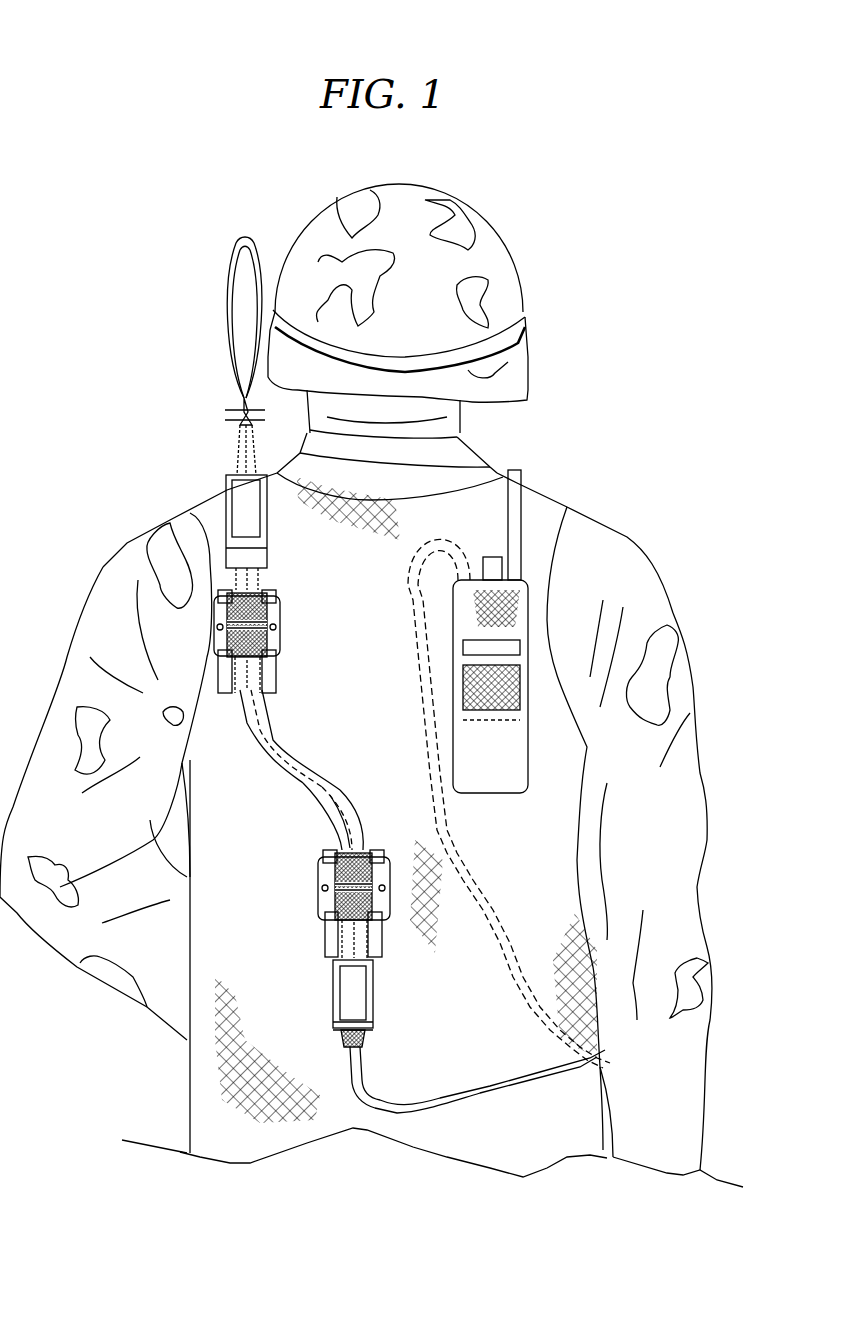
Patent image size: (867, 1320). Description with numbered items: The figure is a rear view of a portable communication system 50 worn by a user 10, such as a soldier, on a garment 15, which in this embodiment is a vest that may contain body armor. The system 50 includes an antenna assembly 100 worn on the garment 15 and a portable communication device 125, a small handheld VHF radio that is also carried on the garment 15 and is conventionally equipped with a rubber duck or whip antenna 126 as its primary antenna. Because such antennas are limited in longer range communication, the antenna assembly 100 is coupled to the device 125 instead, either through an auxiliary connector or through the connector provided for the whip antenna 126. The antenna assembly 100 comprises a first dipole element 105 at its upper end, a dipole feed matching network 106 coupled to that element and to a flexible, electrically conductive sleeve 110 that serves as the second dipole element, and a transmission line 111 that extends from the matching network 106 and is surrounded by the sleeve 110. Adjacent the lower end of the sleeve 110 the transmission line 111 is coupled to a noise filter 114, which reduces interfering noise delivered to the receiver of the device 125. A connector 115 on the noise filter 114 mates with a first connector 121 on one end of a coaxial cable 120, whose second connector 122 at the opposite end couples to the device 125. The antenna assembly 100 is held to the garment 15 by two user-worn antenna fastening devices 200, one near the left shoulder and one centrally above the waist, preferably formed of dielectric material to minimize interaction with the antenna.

The portable communication system 50 is at (612, 405).
The user 10 is at (640, 536).
The garment 15 is at (552, 884).
The first dipole element 105 is at (230, 372).
The dipole feed matching network 106 is at (223, 480).
The user-worn antenna fastening device 200 is at (282, 628).
The electrically conductive sleeve 110 is at (267, 703).
The antenna assembly 100 is at (272, 777).
The transmission line 111 is at (314, 813).
The noise filter 114 is at (333, 970).
The connector 115 is at (333, 1024).
The first connector 121 is at (367, 1046).
The coaxial cable 120 is at (458, 1103).
The second connector 122 is at (405, 581).
The portable communication device 125 is at (467, 752).
The whip antenna 126 is at (533, 507).